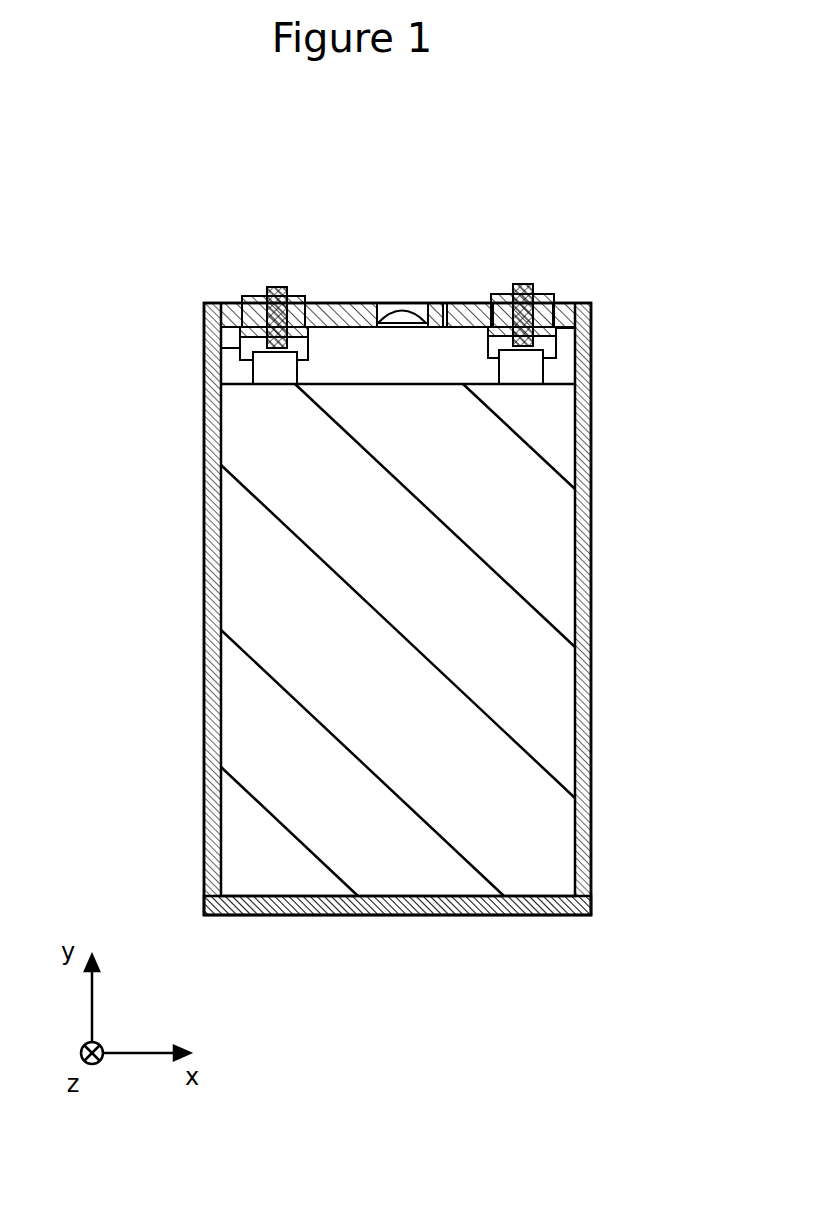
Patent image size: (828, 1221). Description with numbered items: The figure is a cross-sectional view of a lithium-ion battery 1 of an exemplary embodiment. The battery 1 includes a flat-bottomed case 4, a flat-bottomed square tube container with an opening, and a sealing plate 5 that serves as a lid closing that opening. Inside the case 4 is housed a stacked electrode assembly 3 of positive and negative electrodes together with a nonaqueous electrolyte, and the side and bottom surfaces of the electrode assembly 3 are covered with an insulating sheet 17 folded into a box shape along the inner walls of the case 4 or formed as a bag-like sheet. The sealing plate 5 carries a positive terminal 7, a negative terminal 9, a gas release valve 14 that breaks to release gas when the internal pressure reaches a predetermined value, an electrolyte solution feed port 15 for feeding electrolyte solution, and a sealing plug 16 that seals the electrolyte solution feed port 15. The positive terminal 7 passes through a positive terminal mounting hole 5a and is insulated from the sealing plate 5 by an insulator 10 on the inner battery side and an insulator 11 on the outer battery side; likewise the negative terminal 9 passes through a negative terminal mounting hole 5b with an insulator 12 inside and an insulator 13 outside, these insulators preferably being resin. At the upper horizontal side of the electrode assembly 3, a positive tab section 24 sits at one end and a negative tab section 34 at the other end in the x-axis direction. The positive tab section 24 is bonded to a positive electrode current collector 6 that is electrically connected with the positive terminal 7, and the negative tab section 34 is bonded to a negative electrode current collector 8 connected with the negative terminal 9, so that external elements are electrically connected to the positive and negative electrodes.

The battery 1 is at (103, 149).
The electrode assembly 3 is at (492, 792).
The case 4 is at (325, 915).
The sealing plate 5 is at (573, 303).
The positive terminal mounting hole 5a is at (283, 296).
The negative terminal mounting hole 5b is at (488, 297).
The positive electrode current collector 6 is at (215, 348).
The positive terminal 7 is at (270, 288).
The negative electrode current collector 8 is at (556, 345).
The negative terminal 9 is at (518, 297).
The insulator 10 is at (242, 345).
The insulator 11 is at (245, 303).
The insulator 12 is at (578, 328).
The insulator 13 is at (545, 300).
The gas release valve 14 is at (388, 303).
The electrolyte solution feed port 15 is at (443, 303).
The sealing plug 16 is at (432, 303).
The insulating sheet 17 is at (590, 690).
The positive tab section 24 is at (275, 375).
The negative tab section 34 is at (548, 375).